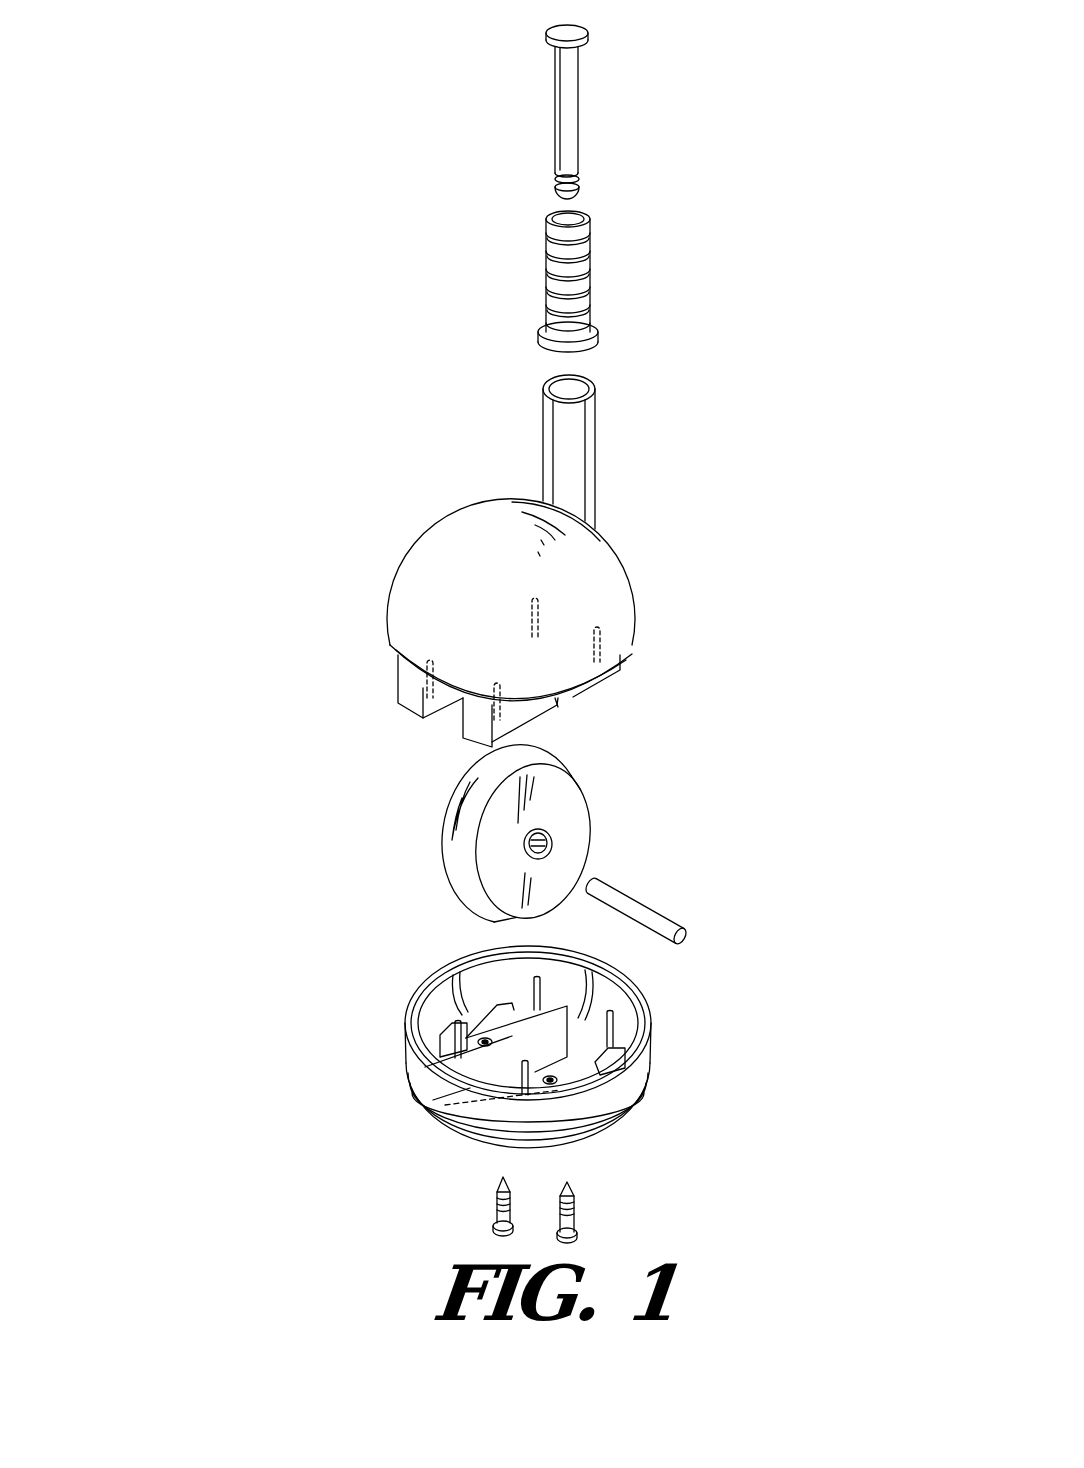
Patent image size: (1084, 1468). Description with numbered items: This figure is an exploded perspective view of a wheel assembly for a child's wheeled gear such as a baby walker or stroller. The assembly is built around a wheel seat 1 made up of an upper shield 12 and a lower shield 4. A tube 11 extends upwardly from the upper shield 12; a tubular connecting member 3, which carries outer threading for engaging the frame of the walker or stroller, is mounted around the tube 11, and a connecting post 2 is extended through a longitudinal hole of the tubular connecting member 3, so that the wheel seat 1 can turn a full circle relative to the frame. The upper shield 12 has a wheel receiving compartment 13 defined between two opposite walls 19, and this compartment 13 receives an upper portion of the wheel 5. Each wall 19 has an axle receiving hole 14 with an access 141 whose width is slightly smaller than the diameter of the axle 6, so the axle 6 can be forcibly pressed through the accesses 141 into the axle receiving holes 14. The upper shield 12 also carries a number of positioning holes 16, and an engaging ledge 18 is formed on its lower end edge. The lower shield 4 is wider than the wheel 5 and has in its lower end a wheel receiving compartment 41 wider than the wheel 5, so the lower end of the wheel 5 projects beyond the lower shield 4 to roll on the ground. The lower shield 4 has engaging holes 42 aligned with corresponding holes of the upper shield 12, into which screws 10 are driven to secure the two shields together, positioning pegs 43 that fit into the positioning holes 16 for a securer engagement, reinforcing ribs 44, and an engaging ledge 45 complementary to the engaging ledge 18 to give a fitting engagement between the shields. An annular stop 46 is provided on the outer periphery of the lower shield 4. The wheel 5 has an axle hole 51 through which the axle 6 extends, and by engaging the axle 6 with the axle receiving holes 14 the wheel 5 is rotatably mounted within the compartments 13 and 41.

The wheel seat 1 is at (507, 600).
The connecting post 2 is at (587, 78).
The tubular connecting member 3 is at (597, 285).
The lower shield 4 is at (539, 1044).
The wheel 5 is at (582, 815).
The axle 6 is at (662, 922).
The screws 10 is at (577, 1218).
The tube 11 is at (580, 452).
The upper shield 12 is at (433, 572).
The wheel receiving compartment 13 is at (455, 717).
The axle receiving hole 14 is at (562, 705).
The positioning holes 16 is at (420, 706).
The engaging ledge 18 is at (575, 693).
The walls 19 is at (403, 677).
The wheel receiving compartment 41 is at (492, 1108).
The engaging holes 42 is at (590, 1090).
The positioning pegs 43 is at (603, 1035).
The reinforcing ribs 44 is at (440, 1022).
The engaging ledge 45 is at (433, 975).
The stop 46 is at (470, 1130).
The axle hole 51 is at (552, 845).
The access 141 is at (572, 697).